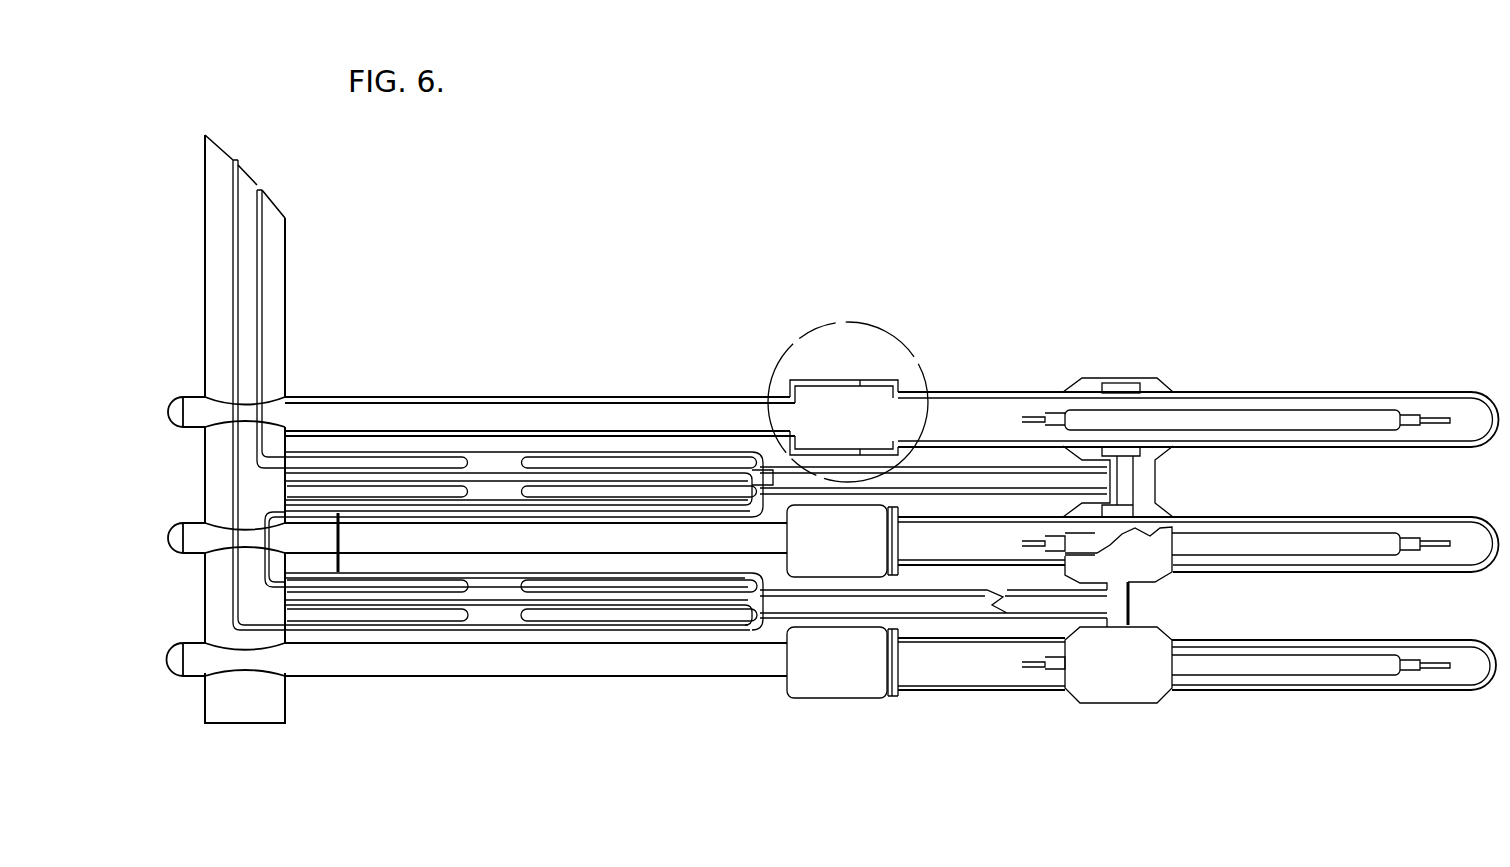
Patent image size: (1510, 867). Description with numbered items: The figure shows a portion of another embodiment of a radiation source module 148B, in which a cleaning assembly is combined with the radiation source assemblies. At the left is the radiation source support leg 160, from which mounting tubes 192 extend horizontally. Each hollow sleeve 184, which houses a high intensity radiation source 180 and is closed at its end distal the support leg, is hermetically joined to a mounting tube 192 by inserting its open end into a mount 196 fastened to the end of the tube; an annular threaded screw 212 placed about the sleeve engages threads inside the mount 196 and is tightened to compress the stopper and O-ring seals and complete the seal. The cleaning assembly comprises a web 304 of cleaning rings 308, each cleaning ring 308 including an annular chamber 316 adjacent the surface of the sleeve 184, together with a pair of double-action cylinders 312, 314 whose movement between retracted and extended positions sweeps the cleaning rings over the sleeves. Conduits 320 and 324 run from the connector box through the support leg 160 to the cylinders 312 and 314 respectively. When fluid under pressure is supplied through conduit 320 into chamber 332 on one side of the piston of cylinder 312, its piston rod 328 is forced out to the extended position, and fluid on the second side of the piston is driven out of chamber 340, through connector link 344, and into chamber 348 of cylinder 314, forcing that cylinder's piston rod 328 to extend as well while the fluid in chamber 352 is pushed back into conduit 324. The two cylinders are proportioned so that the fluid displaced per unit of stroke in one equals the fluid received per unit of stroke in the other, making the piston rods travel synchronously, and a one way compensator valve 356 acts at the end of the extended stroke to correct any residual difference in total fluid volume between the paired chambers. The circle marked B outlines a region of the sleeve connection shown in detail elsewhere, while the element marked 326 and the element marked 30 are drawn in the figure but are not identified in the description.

The radiation source support leg 160 is at (204, 180).
The conduit 324 is at (237, 158).
The conduit 320 is at (262, 190).
The radiation source module 148B is at (354, 270).
The chamber 332 is at (326, 468).
The double-action cylinder 312 is at (381, 445).
The rod 326 is at (499, 453).
The chamber 340 is at (668, 456).
The connector link 344 is at (776, 503).
The double-action cylinder 314 is at (430, 575).
The one way compensator valve 356 is at (337, 530).
The chamber 348 is at (440, 612).
The chamber 352 is at (668, 620).
The piston rod 328 is at (963, 468).
The detail region B is at (866, 326).
The mount 196 is at (850, 698).
The annular threaded screw 212 is at (900, 699).
The hollow sleeve 184 is at (1468, 690).
The high intensity radiation source 180 is at (1308, 690).
The cleaning ring 308 is at (1100, 370).
The annular chamber 316 is at (1142, 368).
The stop bar 30 is at (1135, 600).
The web 304 is at (1117, 708).
The mounting tube 192 is at (620, 677).